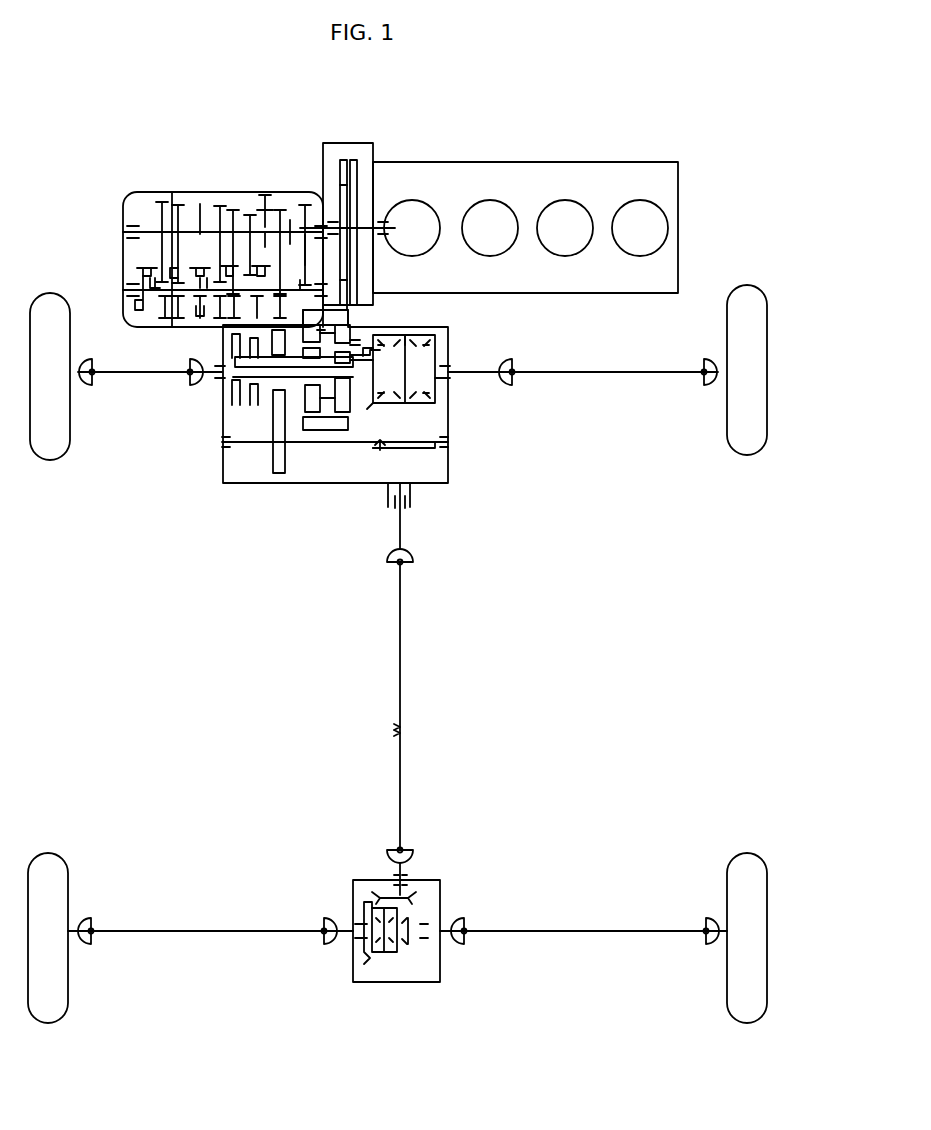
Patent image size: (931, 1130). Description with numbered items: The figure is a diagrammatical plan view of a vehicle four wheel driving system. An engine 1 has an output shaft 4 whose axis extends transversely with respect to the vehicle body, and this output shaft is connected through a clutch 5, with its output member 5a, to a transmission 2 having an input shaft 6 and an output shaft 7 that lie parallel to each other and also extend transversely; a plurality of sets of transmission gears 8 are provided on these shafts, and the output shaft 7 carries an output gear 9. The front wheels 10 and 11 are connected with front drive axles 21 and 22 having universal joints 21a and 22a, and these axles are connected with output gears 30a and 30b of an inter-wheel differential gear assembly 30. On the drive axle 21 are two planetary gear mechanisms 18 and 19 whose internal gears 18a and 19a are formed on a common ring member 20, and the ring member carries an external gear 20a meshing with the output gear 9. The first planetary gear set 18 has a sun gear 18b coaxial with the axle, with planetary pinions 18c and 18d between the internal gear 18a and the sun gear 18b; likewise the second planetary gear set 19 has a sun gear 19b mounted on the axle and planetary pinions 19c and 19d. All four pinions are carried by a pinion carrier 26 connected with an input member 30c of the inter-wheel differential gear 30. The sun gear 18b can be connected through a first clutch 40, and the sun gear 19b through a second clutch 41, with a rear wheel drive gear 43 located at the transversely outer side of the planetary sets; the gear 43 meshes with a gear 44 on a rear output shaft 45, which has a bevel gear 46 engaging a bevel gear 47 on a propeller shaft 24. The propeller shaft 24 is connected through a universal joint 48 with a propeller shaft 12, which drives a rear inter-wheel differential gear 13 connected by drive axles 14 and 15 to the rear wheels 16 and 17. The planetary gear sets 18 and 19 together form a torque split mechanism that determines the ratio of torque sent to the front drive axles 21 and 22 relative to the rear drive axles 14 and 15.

The engine 1 is at (503, 160).
The transmission 2 is at (140, 190).
The output shaft 4 is at (360, 225).
The clutch 5 is at (358, 162).
The clutch output member 5a is at (350, 318).
The input shaft 6 is at (290, 225).
The output shaft 7 is at (300, 292).
The transmission gears 8 is at (213, 200).
The output gear 9 is at (305, 262).
The front wheel 10 is at (68, 432).
The front wheel 11 is at (728, 442).
The propeller shaft 12 is at (402, 660).
The rear inter-wheel differential gear 13 is at (445, 893).
The drive axle 14 is at (226, 935).
The drive axle 15 is at (550, 935).
The rear wheel 16 is at (66, 996).
The rear wheel 17 is at (728, 986).
The first planetary gear set 18 is at (300, 445).
The internal gear 18a is at (300, 325).
The sun gear 18b is at (250, 400).
The planetary pinion 18c is at (205, 370).
The planetary pinion 18d is at (300, 422).
The second planetary gear set 19 is at (435, 358).
The internal gear 19a is at (350, 345).
The sun gear 19b is at (336, 445).
The planetary pinion 19c is at (365, 345).
The planetary pinion 19d is at (342, 445).
The ring member 20 is at (330, 325).
The external gear 20a is at (317, 330).
The front drive axle 21 is at (240, 388).
The universal joint 21a is at (193, 386).
The front drive axle 22 is at (506, 384).
The universal joint 22a is at (510, 360).
The propeller shaft 24 is at (402, 540).
The pinion carrier 26 is at (385, 400).
The inter-wheel differential gear assembly 30 is at (440, 345).
The output gear 30a is at (373, 448).
The output gear 30b is at (440, 382).
The input member 30c is at (425, 340).
The first clutch 40 is at (300, 335).
The second clutch 41 is at (270, 340).
The rear wheel drive gear 43 is at (290, 410).
The gear 44 is at (278, 450).
The rear output shaft 45 is at (448, 442).
The bevel gear 46 is at (406, 486).
The bevel pinion 47 is at (430, 476).
The universal joint 48 is at (412, 565).